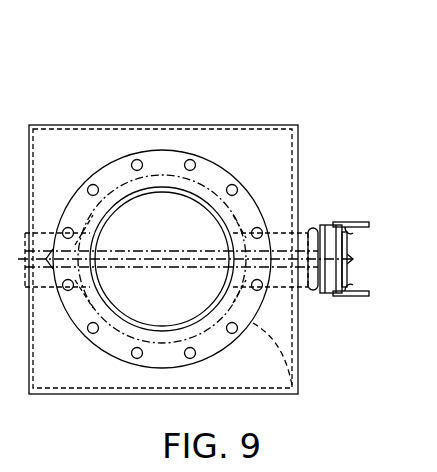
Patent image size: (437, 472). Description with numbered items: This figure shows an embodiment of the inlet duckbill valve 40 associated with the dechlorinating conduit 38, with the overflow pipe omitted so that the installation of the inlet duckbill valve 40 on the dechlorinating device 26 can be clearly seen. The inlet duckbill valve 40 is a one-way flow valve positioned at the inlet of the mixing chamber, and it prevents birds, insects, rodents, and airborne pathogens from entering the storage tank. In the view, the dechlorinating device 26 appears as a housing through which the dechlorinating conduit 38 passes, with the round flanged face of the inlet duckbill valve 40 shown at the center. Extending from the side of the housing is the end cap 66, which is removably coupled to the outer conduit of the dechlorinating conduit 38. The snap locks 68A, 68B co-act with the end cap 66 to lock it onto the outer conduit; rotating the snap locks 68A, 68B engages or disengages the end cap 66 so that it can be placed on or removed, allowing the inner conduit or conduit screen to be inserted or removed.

The dechlorinating device 26 is at (262, 125).
The dechlorinating conduit 38 is at (298, 128).
The inlet duckbill valve 40 is at (292, 385).
The end cap 66 is at (353, 259).
The snap lock 68A is at (360, 222).
The snap lock 68B is at (357, 297).